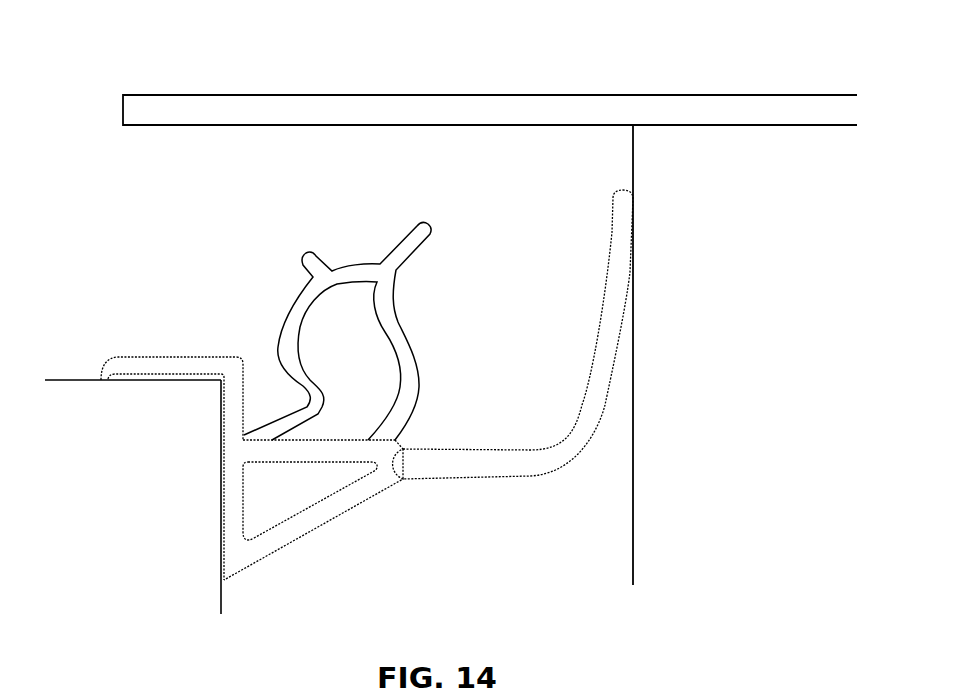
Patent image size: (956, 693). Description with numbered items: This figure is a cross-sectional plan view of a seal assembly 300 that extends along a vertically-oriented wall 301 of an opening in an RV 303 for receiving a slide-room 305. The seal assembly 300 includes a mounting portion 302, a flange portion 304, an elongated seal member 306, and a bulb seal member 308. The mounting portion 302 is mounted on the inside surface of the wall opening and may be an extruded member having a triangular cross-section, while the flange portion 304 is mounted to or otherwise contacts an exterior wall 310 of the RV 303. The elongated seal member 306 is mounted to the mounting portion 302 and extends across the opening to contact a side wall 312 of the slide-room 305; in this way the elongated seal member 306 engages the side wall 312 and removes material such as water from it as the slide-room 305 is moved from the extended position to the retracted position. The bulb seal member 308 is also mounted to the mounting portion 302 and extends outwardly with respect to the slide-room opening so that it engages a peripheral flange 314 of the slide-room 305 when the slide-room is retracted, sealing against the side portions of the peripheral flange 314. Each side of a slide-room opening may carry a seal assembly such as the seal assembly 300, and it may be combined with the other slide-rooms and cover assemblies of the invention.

The seal assembly 300 is at (247, 204).
The vertically-oriented wall 301 is at (222, 497).
The mounting portion 302 is at (269, 549).
The RV 303 is at (130, 506).
The flange portion 304 is at (128, 357).
The slide-room 305 is at (750, 321).
The elongated seal member 306 is at (610, 268).
The bulb seal member 308 is at (357, 260).
The exterior wall 310 is at (65, 377).
The side wall 312 is at (633, 545).
The peripheral flange 314 is at (237, 92).